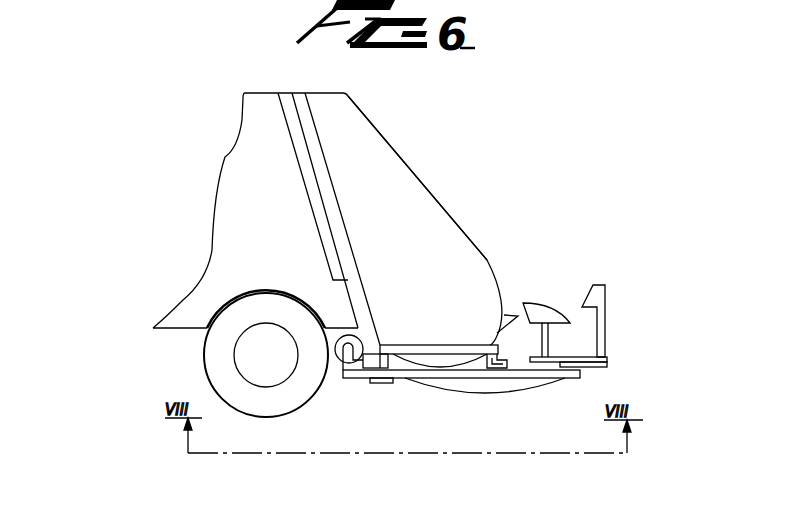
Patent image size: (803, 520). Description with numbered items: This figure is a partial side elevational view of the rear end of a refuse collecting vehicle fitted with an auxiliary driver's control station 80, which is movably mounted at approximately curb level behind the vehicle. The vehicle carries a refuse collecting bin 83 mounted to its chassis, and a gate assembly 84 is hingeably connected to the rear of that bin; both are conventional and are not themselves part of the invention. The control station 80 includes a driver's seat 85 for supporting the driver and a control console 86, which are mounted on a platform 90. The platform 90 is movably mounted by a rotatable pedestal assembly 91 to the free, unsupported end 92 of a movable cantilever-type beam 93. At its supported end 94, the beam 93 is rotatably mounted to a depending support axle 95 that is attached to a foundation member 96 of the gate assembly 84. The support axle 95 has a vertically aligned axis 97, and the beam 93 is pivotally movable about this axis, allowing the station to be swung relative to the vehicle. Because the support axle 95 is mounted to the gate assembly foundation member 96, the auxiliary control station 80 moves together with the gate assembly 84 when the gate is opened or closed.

The auxiliary driver's control station 80 is at (565, 290).
The refuse collecting bin 83 is at (255, 174).
The gate assembly 84 is at (397, 177).
The driver's seat 85 is at (540, 303).
The control console 86 is at (600, 300).
The platform 90 is at (590, 357).
The rotatable pedestal assembly 91 is at (600, 367).
The free end of beam 92 is at (560, 382).
The cantilever-type beam 93 is at (477, 383).
The supported end of beam 94 is at (408, 373).
The support axle 95 is at (362, 362).
The foundation member 96 is at (355, 282).
The vertical axis 97 is at (377, 383).